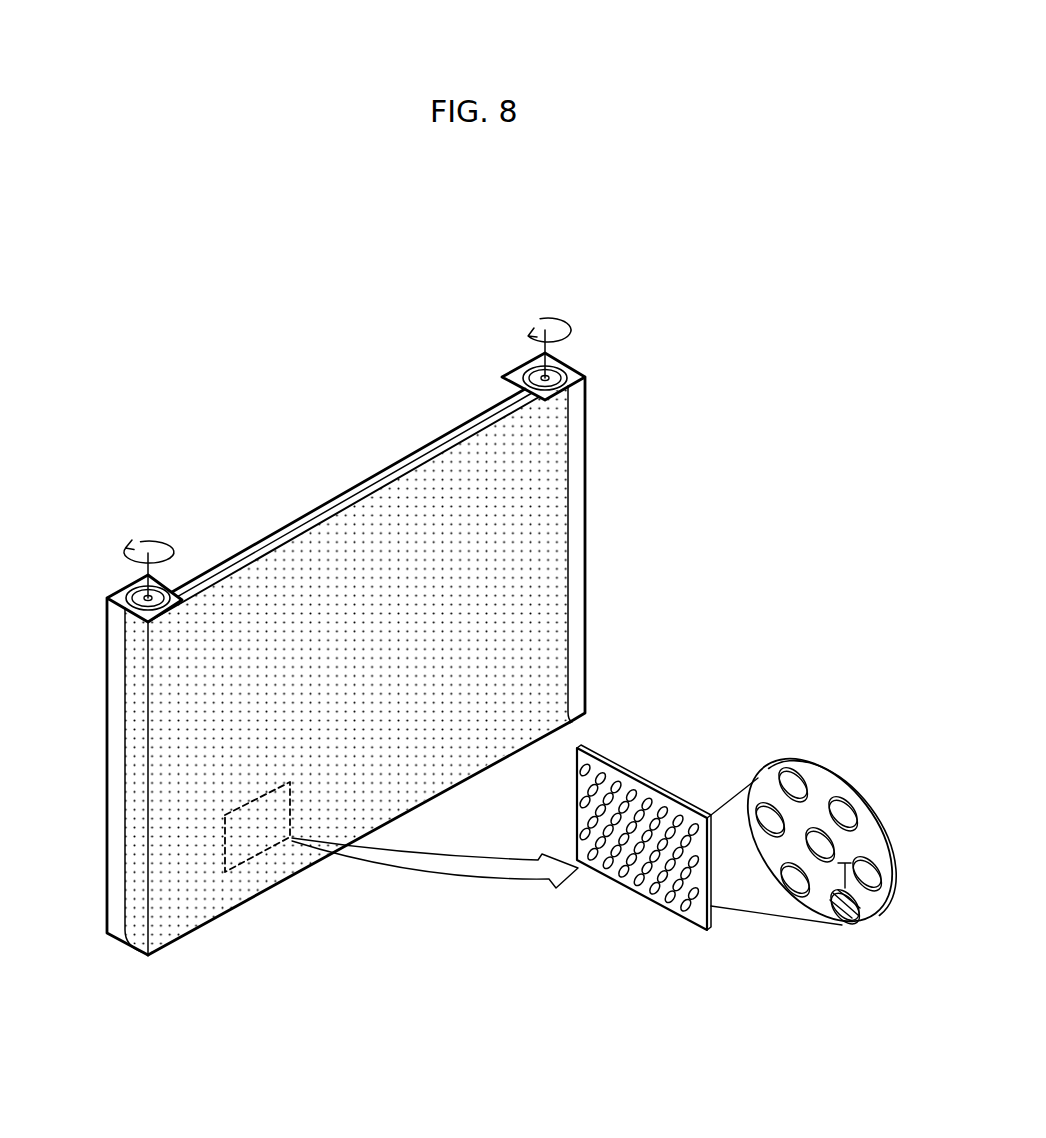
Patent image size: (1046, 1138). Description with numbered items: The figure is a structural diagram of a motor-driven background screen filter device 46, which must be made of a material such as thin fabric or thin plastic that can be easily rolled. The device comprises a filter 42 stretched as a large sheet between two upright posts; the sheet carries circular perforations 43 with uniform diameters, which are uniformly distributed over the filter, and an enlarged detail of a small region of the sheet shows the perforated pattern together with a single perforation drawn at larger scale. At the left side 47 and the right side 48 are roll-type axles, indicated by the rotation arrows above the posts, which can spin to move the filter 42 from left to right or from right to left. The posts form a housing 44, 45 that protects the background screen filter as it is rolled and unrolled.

The filter 42 is at (550, 510).
The circular perforations 43 is at (893, 887).
The housing 44 is at (521, 375).
The housing 45 is at (113, 647).
The motor-driven background screen filter device 46 is at (347, 487).
The left side roll-type axle 47 is at (147, 567).
The right side roll-type axle 48 is at (543, 331).